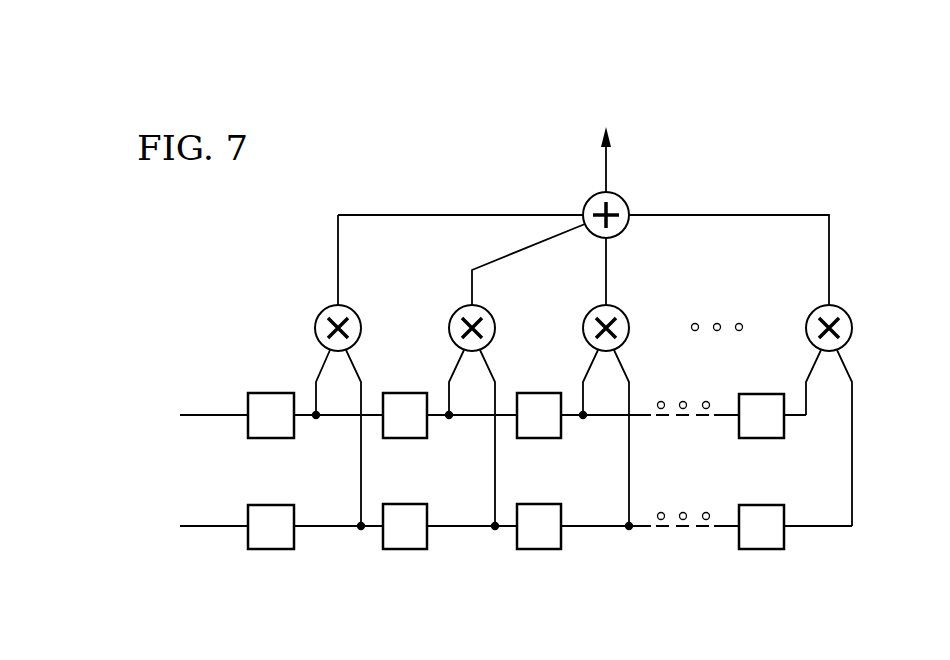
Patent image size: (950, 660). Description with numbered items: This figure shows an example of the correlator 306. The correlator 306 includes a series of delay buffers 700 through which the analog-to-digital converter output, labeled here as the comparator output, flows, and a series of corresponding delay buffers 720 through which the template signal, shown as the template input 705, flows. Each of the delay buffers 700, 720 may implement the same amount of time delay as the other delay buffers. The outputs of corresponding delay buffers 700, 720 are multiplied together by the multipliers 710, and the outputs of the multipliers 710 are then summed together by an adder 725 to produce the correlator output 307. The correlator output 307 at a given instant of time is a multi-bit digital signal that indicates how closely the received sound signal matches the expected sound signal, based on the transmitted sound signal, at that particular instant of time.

The correlator 306 is at (735, 79).
The correlator output 307 is at (213, 418).
The template input 705 is at (213, 529).
The delay buffers 700 is at (267, 440).
The multipliers 710 is at (325, 308).
The delay buffers 720 is at (270, 551).
The adder 725 is at (620, 193).